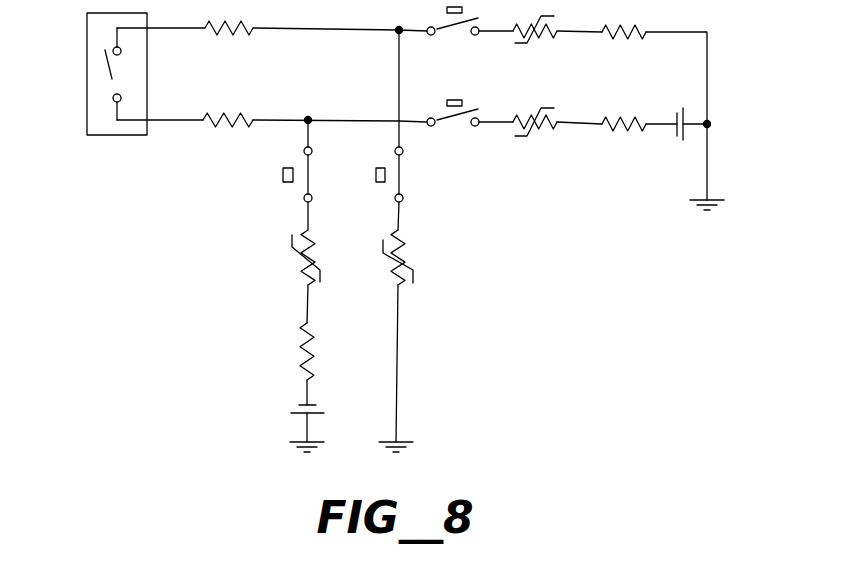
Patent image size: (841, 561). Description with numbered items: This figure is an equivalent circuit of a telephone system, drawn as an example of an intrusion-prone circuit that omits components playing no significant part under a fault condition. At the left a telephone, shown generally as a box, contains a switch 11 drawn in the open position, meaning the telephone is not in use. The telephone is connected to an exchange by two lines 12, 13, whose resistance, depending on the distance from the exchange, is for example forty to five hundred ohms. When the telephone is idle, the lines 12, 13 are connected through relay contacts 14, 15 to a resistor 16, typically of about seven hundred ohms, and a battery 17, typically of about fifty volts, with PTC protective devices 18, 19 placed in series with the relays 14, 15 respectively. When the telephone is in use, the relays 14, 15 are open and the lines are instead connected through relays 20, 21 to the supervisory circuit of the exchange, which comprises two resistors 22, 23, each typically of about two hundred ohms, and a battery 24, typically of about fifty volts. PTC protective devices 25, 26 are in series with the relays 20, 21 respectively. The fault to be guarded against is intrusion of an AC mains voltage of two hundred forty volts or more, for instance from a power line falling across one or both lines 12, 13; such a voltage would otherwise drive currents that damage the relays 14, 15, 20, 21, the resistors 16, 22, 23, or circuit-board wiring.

The switch 11 is at (110, 79).
The line 12 is at (218, 40).
The line 13 is at (240, 111).
The relay contact 14 is at (309, 173).
The relay contact 15 is at (400, 177).
The resistor 16 is at (310, 331).
The battery 17 is at (316, 411).
The PTC protective device 18 is at (309, 248).
The PTC protective device 19 is at (402, 278).
The relay 20 is at (452, 33).
The relay 21 is at (452, 124).
The resistor 22 is at (639, 38).
The resistor 23 is at (639, 130).
The battery 24 is at (683, 115).
The PTC protective device 25 is at (545, 40).
The PTC protective device 26 is at (545, 131).